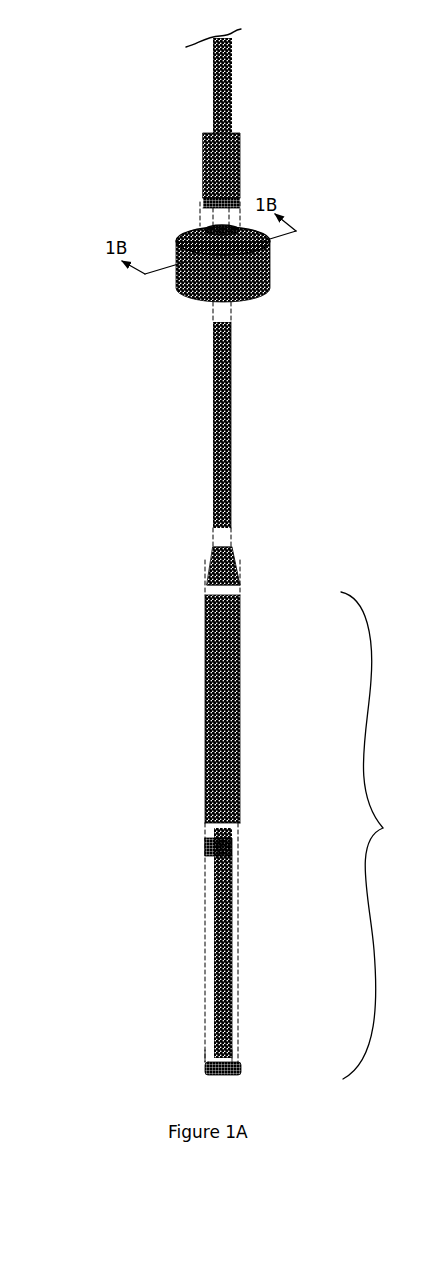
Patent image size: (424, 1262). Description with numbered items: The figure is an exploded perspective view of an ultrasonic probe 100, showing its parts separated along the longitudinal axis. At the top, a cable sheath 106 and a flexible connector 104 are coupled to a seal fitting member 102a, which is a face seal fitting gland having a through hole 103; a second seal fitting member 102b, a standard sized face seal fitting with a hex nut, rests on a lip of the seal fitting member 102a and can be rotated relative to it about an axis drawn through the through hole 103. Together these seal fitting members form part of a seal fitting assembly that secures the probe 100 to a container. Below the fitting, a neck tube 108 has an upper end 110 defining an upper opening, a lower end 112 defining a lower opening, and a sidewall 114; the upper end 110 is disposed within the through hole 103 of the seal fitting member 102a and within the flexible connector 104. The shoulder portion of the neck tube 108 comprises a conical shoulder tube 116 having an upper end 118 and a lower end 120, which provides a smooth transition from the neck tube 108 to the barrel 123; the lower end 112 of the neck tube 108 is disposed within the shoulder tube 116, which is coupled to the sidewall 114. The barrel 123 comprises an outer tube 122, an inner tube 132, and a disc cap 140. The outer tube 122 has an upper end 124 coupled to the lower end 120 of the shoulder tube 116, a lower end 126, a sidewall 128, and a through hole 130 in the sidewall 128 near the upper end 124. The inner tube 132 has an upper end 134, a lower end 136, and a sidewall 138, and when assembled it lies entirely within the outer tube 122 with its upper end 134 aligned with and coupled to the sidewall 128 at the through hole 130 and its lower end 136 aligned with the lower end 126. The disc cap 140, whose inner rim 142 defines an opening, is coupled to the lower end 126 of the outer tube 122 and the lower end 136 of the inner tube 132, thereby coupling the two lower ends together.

The ultrasonic probe 100 is at (106, 121).
The seal fitting member 102a is at (217, 230).
The seal fitting member 102b is at (262, 276).
The through hole 103 is at (218, 224).
The flexible connector 104 is at (230, 173).
The cable sheath 106 is at (223, 80).
The neck tube 108 is at (218, 401).
The upper end 110 is at (215, 322).
The lower end 112 is at (213, 528).
The sidewall 114 is at (229, 432).
The shoulder tube 116 is at (232, 563).
The upper end 118 is at (213, 546).
The lower end 120 is at (238, 591).
The outer tube 122 is at (222, 678).
The barrel 123 is at (382, 835).
The upper end 124 is at (212, 591).
The lower end 126 is at (204, 832).
The sidewall 128 is at (235, 740).
The through hole 130 is at (205, 617).
The inner tube 132 is at (226, 940).
The upper end 134 is at (203, 843).
The lower end 136 is at (238, 1062).
The sidewall 138 is at (233, 895).
The disc cap 140 is at (238, 1070).
The inner rim 142 is at (205, 1063).